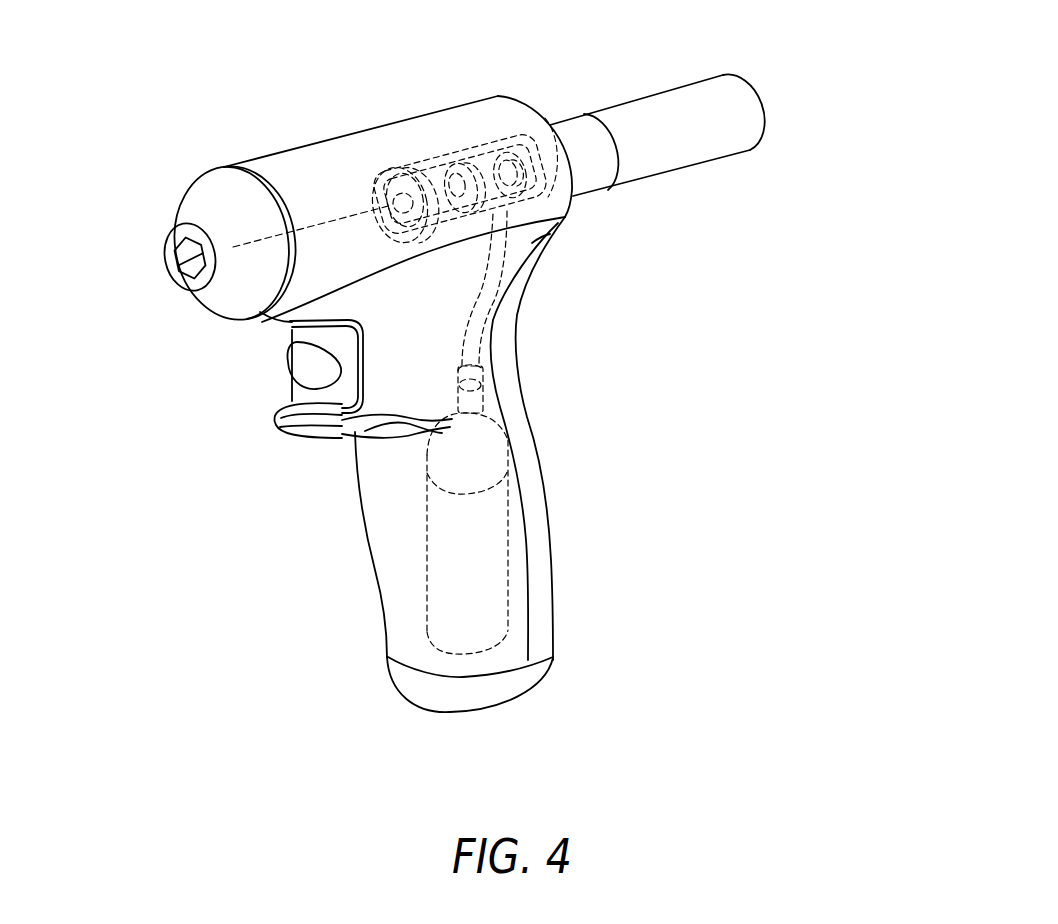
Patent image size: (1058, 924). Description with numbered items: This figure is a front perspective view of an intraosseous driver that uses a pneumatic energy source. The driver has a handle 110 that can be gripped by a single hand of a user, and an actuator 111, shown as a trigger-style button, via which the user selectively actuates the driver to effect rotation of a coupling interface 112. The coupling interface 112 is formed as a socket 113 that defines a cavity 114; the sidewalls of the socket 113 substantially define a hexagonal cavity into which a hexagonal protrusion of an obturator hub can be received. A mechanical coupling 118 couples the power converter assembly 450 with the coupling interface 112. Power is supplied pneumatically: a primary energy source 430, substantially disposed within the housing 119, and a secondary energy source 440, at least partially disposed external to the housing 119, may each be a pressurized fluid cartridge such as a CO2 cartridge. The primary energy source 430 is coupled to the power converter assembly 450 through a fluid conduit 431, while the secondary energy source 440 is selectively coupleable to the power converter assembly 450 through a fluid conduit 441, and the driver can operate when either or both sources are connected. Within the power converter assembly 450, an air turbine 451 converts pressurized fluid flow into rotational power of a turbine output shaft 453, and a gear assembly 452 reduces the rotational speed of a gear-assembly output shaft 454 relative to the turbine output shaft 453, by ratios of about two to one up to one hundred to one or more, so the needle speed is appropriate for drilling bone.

The handle 110 is at (384, 532).
The actuator 111 is at (308, 366).
The coupling interface 112 is at (166, 290).
The socket 113 is at (196, 284).
The cavity 114 is at (174, 254).
The mechanical coupling 118 is at (313, 223).
The housing 119 is at (387, 604).
The primary energy source 430 is at (493, 532).
The fluid conduit 431 is at (480, 303).
The secondary energy source 440 is at (657, 93).
The fluid conduit 441 is at (513, 154).
The power converter assembly 450 is at (467, 145).
The air turbine 451 is at (506, 164).
The gear assembly 452 is at (418, 172).
The turbine output shaft 453 is at (455, 186).
The gear-assembly output shaft 454 is at (396, 200).